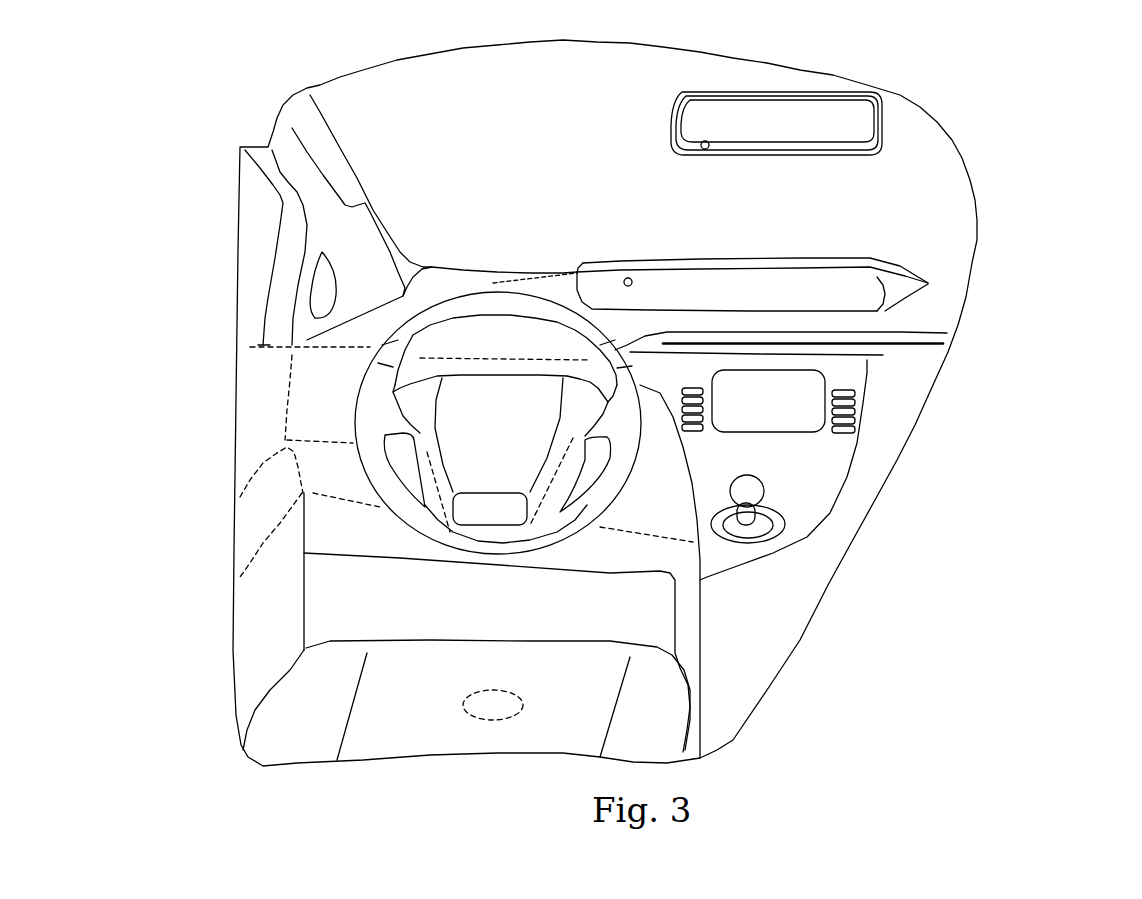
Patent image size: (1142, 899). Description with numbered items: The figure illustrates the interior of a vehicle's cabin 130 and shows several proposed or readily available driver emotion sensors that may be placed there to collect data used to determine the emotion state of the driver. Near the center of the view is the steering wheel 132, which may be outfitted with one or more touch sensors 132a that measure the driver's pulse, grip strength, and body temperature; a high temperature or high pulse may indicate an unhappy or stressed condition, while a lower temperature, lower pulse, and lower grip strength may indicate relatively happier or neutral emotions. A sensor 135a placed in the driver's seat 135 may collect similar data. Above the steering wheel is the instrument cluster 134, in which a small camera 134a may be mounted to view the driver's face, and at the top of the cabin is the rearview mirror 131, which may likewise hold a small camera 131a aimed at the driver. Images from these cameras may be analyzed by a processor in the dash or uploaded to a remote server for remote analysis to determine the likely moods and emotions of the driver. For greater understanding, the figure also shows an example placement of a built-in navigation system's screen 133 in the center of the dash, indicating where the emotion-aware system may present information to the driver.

The vehicle's cabin 130 is at (678, 403).
The rearview mirror 131 is at (776, 94).
The small camera 131a is at (732, 85).
The steering wheel 132 is at (359, 423).
The touch sensors 132a is at (313, 361).
The built-in navigation system's screen 133 is at (854, 538).
The instrument cluster 134 is at (647, 166).
The small camera 134a is at (470, 157).
The driver's seat 135 is at (466, 654).
The sensor 135a is at (467, 747).